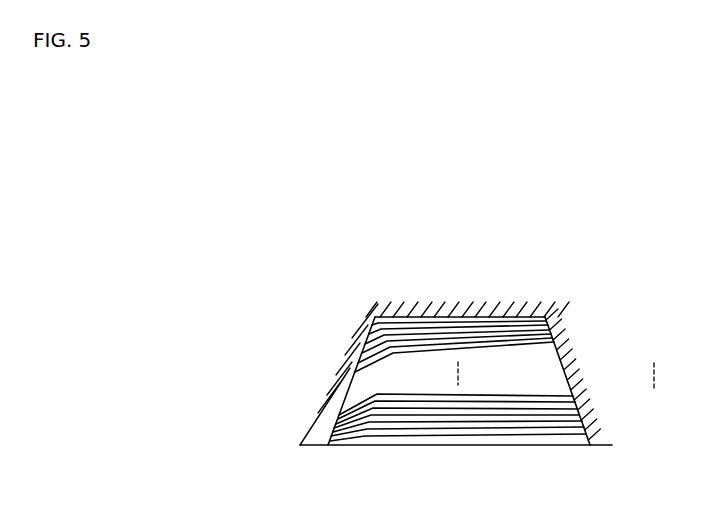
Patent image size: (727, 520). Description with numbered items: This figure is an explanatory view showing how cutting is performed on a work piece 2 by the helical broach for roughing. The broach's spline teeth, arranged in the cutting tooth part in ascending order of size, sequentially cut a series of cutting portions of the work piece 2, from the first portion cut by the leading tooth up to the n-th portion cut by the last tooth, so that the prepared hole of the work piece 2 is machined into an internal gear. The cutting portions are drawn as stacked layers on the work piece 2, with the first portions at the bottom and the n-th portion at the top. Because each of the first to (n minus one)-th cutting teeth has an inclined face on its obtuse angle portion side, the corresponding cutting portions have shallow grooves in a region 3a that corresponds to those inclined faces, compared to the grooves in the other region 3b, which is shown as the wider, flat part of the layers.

The work piece 2 is at (323, 387).
The region corresponding to the inclined faces 3a is at (368, 448).
The other region 3b is at (588, 450).